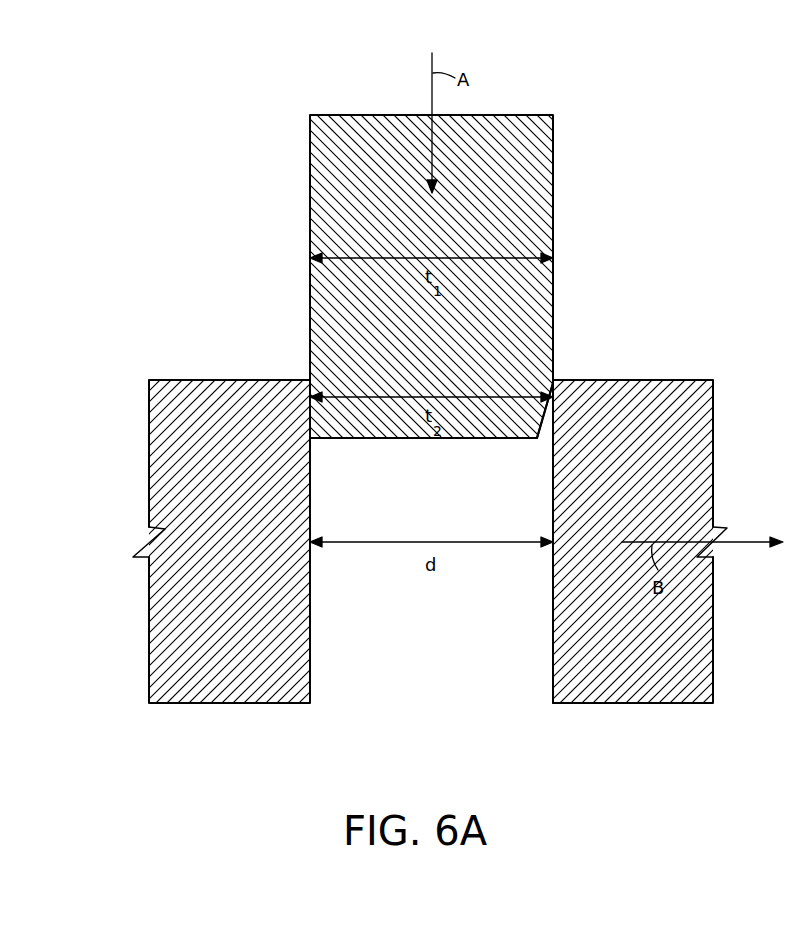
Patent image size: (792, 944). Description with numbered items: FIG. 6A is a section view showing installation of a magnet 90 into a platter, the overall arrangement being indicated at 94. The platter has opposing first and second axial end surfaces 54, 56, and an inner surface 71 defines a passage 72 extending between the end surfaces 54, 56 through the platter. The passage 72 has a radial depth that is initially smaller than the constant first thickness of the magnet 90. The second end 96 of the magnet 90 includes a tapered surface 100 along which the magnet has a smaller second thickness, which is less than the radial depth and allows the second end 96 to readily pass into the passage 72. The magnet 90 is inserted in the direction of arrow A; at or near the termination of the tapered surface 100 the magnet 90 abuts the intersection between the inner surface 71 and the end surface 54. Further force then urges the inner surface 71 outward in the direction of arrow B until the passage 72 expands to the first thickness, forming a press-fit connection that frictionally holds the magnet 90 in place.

The welding arrangement 94 is at (200, 94).
The magnet 90 is at (553, 170).
The first axial end surface 54 is at (196, 380).
The second axial end surface 56 is at (637, 703).
The second end 96 is at (299, 371).
The tapered surface 100 is at (563, 402).
The inner surface 71 is at (553, 637).
The passage 72 is at (350, 680).